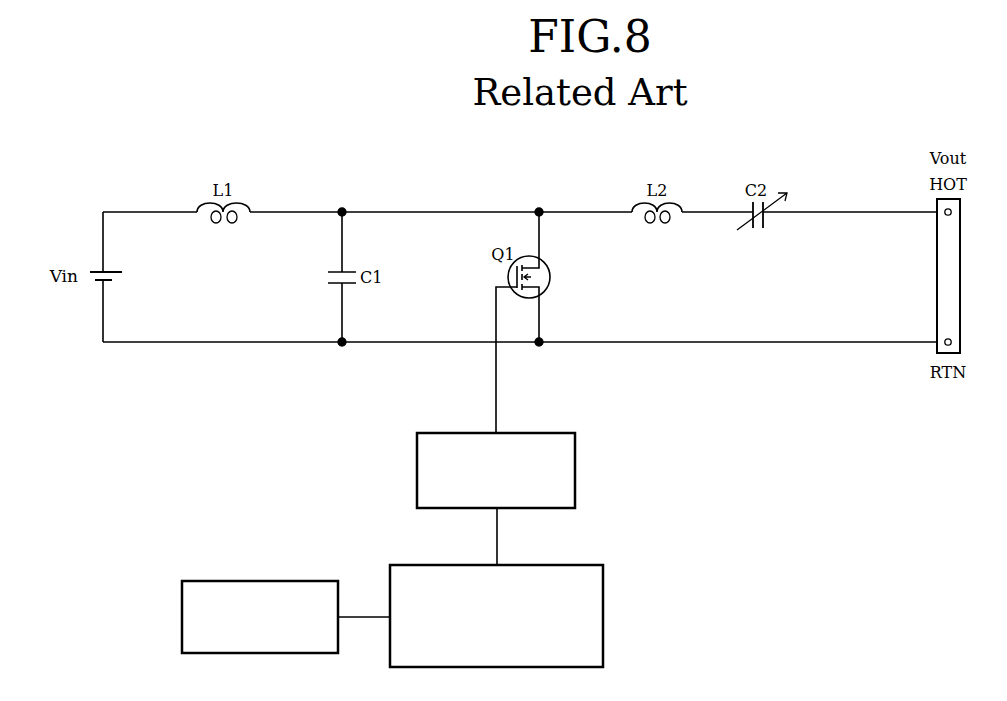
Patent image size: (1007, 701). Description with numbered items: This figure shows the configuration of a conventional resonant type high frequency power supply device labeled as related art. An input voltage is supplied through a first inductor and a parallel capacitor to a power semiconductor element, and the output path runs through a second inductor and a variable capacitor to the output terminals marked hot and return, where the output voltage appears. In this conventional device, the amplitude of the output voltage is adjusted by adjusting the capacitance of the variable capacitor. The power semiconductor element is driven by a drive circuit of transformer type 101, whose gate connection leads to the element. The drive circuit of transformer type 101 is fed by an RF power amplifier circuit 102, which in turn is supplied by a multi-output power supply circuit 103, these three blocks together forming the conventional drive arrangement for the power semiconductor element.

The drive circuit of transformer type 101 is at (525, 433).
The RF power amplifier circuit 102 is at (557, 565).
The multi-output power supply circuit 103 is at (288, 581).